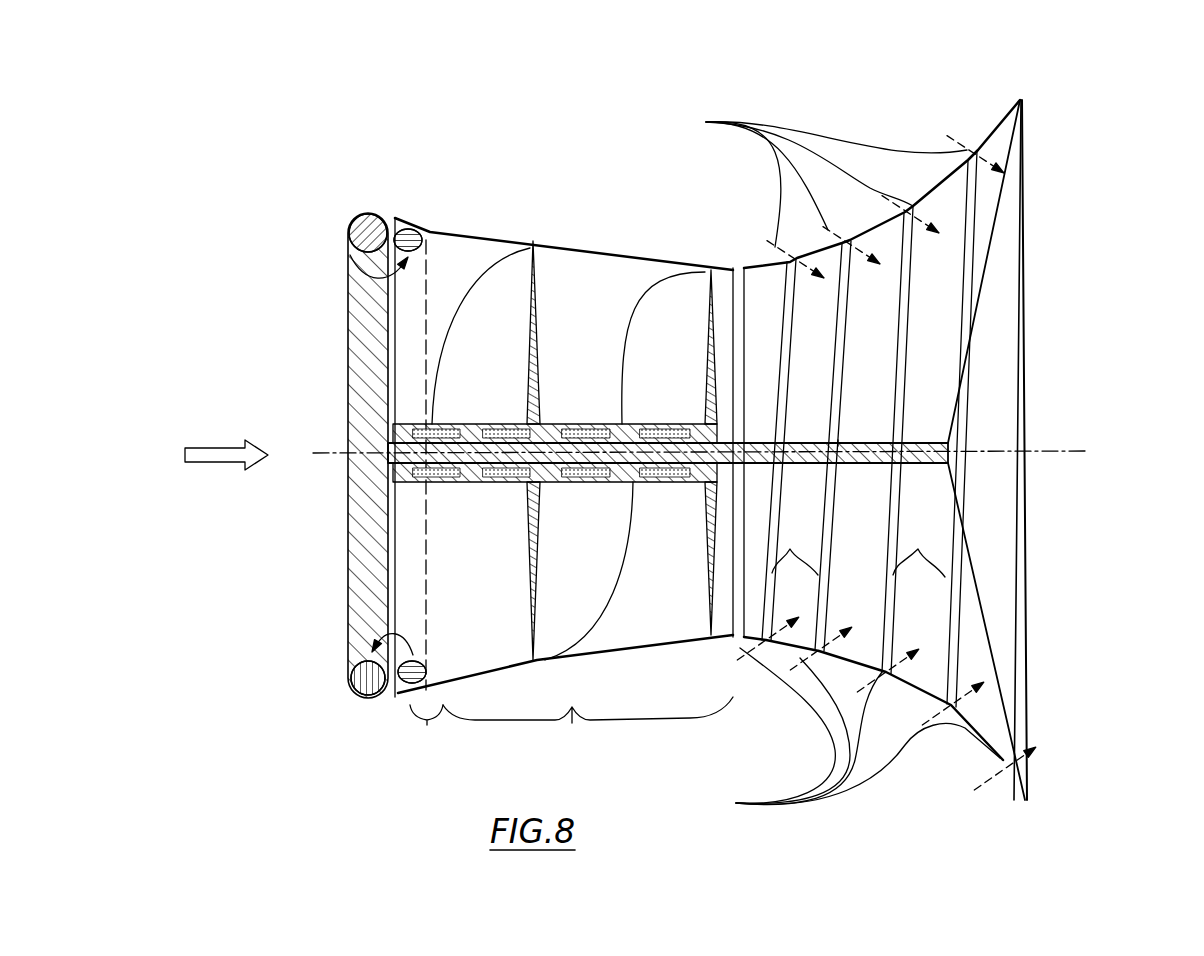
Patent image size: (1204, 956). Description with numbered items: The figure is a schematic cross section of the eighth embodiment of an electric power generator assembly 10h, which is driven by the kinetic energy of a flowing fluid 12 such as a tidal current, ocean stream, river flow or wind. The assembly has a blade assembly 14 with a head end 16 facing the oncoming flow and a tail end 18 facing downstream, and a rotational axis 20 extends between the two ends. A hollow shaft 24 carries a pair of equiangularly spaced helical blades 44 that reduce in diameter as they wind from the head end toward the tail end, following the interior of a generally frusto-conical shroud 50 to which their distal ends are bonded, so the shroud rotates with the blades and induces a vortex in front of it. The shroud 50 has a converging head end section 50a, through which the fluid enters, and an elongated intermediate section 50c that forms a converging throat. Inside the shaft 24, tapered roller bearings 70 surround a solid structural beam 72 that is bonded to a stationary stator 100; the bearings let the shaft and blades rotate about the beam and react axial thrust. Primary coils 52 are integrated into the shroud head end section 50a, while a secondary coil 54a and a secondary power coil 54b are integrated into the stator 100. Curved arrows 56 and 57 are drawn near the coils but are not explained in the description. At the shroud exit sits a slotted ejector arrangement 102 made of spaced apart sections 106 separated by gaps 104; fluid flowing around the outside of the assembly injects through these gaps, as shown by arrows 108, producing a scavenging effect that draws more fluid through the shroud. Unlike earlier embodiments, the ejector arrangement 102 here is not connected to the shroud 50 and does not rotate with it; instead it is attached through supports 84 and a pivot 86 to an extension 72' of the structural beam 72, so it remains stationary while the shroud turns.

The electric power generator assembly 10h is at (606, 226).
The flowing fluid 12 is at (225, 470).
The blade assembly 14 is at (598, 281).
The head end 16 is at (427, 350).
The tail end 18 is at (694, 534).
The rotational axis 20 is at (323, 457).
The shaft 24 is at (490, 422).
The helical blades 44 is at (533, 264).
The shroud 50 is at (473, 220).
The head end section 50a is at (427, 735).
The intermediate section 50c is at (588, 730).
The primary coils 52 is at (416, 226).
The secondary coil 54a is at (363, 213).
The secondary power coil 54b is at (362, 700).
The rotation arrow 56 is at (357, 288).
The rotation arrow 57 is at (408, 640).
The tapered roller bearings 70 is at (598, 422).
The structural beam 72 is at (681, 452).
The extension of the structural beam 72' is at (863, 414).
The supports 84 is at (985, 255).
The pivot 86 is at (985, 447).
The stator 100 is at (362, 356).
The slotted ejector arrangement 102 is at (1038, 203).
The gaps 104 is at (886, 463).
The spaced apart sections 106 is at (831, 395).
The arrows 108 is at (828, 467).